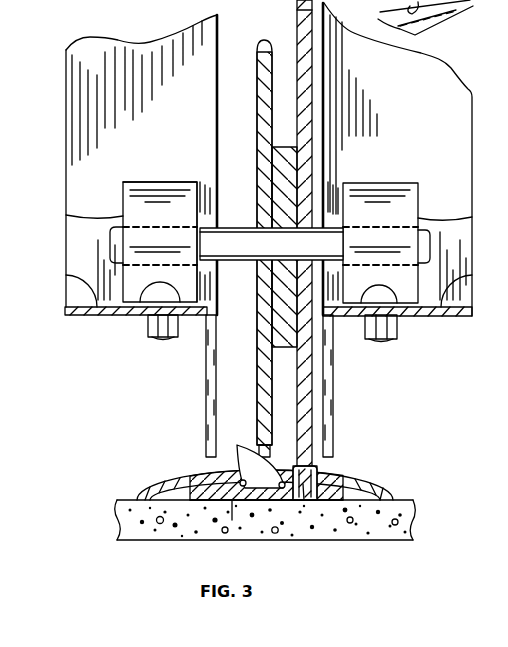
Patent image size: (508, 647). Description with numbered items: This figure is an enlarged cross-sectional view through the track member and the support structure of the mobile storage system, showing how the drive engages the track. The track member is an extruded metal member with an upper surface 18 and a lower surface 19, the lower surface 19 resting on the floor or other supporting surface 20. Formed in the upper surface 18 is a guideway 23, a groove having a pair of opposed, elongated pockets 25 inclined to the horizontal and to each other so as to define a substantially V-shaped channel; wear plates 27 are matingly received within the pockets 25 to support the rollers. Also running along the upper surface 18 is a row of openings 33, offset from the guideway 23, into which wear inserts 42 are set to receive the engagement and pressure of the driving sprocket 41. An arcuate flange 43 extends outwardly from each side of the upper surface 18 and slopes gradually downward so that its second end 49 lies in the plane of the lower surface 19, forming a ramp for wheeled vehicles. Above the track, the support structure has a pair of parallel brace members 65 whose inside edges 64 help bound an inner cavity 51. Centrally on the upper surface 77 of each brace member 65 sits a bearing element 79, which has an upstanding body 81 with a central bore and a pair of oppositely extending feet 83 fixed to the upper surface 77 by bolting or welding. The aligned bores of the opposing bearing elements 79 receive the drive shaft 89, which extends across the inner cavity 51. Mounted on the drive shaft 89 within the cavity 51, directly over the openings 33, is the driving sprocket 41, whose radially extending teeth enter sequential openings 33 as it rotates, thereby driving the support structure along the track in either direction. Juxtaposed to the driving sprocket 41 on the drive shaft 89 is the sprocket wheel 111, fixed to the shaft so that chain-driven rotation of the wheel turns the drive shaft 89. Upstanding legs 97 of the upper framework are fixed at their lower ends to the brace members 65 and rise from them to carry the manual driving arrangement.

The upper surface 18 is at (340, 473).
The lower surface 19 is at (236, 530).
The supporting surface 20 is at (400, 500).
The guideway 23 is at (242, 470).
The pockets 25 is at (237, 447).
The wear plates 27 is at (222, 532).
The openings 33 is at (303, 484).
The driving sprocket 41 is at (300, 5).
The wear inserts 42 is at (314, 472).
The arcuate flange 43 is at (507, 372).
The second end 49 is at (507, 393).
The inner cavity 51 is at (195, 181).
The inside edges 64 is at (216, 325).
The brace members 65 is at (110, 318).
The upper surface 77 is at (66, 277).
The bearing element 79 is at (141, 185).
The upstanding body 81 is at (66, 216).
The feet 83 is at (152, 326).
The drive shaft 89 is at (251, 240).
The upstanding legs 97 is at (82, 177).
The sprocket wheel 111 is at (256, 58).